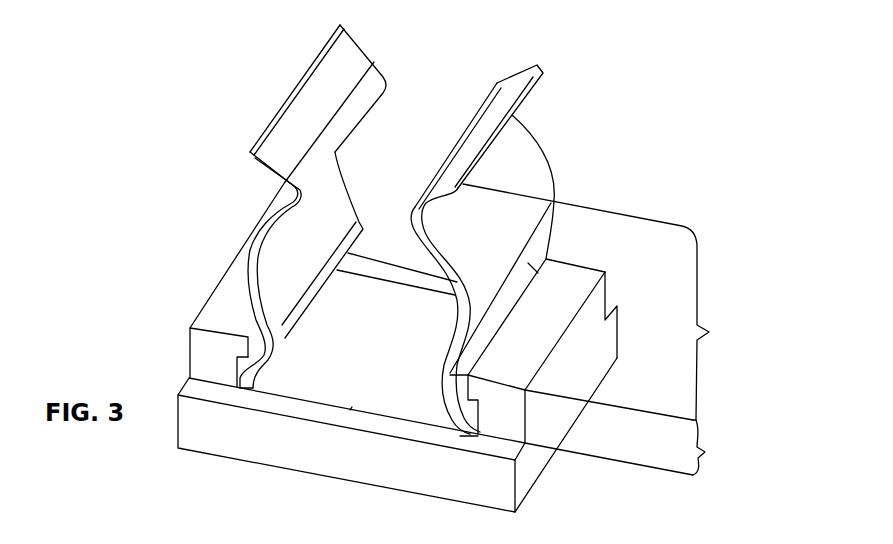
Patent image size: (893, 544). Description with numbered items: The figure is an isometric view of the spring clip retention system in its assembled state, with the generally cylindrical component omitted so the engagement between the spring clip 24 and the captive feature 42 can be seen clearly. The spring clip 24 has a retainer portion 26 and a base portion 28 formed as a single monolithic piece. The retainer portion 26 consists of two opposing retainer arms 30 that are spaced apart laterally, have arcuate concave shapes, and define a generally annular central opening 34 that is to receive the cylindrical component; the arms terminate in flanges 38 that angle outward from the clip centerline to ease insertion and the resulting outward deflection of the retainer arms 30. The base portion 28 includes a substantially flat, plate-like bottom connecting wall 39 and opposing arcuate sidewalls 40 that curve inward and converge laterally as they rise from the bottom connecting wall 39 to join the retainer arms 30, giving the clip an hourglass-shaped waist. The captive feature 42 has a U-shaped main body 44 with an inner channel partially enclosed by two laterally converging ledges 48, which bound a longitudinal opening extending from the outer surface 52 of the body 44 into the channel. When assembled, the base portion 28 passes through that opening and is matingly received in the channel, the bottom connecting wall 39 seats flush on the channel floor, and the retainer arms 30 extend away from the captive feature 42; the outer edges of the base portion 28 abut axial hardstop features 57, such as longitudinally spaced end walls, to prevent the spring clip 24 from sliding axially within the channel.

The spring clip 24 is at (533, 182).
The retainer portion 26 is at (605, 302).
The base portion 28 is at (637, 432).
The retainer arms 30 is at (257, 237).
The central opening 34 is at (333, 245).
The flanges 38 is at (357, 50).
The bottom connecting wall 39 is at (364, 342).
The sidewalls 40 is at (272, 358).
The captive feature 42 is at (521, 323).
The main body 44 is at (527, 473).
The ledges 48 is at (246, 346).
The outer surface 52 is at (228, 287).
The axial hardstop features 57 is at (350, 410).